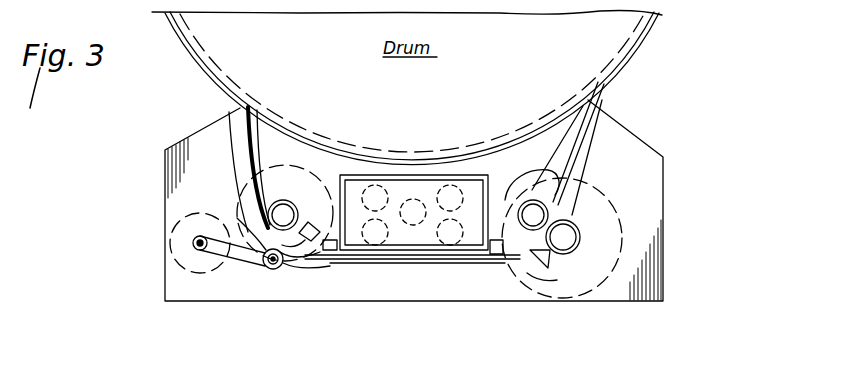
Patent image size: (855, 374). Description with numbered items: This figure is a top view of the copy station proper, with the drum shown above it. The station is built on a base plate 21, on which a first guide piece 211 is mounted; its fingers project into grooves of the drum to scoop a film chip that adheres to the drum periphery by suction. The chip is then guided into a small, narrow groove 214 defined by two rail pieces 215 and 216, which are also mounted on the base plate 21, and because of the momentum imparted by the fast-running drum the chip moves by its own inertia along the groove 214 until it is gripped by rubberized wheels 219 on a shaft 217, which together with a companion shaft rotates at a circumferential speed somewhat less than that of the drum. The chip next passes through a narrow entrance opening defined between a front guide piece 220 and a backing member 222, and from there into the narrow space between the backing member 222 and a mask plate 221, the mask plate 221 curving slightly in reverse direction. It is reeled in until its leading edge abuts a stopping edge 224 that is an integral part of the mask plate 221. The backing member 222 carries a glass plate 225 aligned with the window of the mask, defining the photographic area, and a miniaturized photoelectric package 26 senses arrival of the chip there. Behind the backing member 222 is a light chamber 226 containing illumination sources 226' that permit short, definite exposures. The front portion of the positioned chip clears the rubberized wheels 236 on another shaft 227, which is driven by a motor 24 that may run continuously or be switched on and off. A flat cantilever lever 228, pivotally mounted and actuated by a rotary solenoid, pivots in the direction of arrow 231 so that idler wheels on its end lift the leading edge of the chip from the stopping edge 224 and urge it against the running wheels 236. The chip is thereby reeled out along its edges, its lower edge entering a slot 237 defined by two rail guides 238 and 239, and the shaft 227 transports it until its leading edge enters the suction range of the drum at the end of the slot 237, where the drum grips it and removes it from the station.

The base plate 21 is at (643, 220).
The motor 24 is at (236, 195).
The photoelectric cell combination package 26 is at (310, 224).
The first guide piece 211 is at (540, 160).
The groove 214 is at (577, 165).
The rail piece 215 is at (583, 147).
The rail piece 216 is at (545, 178).
The shaft 217 is at (512, 265).
The rubberized wheels 219 is at (568, 237).
The front guide piece 220 is at (530, 270).
The mask plate 221 is at (458, 268).
The backing member 222 is at (505, 263).
The stopping edge 224 is at (278, 270).
The glass plate 225 is at (400, 255).
The light chamber 226 is at (414, 185).
The illumination sources 226' is at (442, 202).
The shaft 227 is at (277, 213).
The cantilever lever 228 is at (233, 270).
The arrow 231 is at (253, 278).
The rubberized wheels 236 is at (299, 252).
The slot 237 is at (240, 147).
The rail guide 238 is at (240, 127).
The rail guide 239 is at (257, 133).